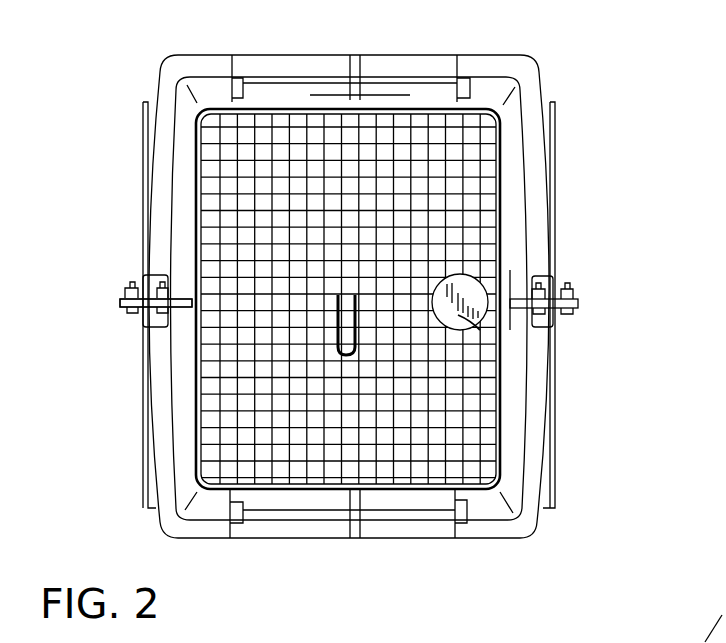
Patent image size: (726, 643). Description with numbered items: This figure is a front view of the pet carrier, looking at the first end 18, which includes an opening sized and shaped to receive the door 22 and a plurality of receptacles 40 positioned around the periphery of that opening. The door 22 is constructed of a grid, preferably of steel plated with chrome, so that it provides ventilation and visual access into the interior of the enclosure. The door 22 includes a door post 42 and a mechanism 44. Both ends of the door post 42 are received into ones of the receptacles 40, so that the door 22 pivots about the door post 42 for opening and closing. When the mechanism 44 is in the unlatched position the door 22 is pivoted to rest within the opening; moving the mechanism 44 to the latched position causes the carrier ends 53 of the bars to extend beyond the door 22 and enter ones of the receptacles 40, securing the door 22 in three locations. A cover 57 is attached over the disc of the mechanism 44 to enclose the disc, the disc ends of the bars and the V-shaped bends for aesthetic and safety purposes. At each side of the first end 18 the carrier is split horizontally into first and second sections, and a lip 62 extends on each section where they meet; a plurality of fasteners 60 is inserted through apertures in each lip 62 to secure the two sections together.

The first end 18 is at (577, 436).
The door 22 is at (359, 299).
The receptacles 40 is at (242, 74).
The door post 42 is at (236, 174).
The mechanism 44 is at (492, 273).
The carrier ends 53 is at (238, 142).
The cover 57 is at (465, 316).
The fasteners 60 is at (129, 316).
The lip 62 is at (116, 299).